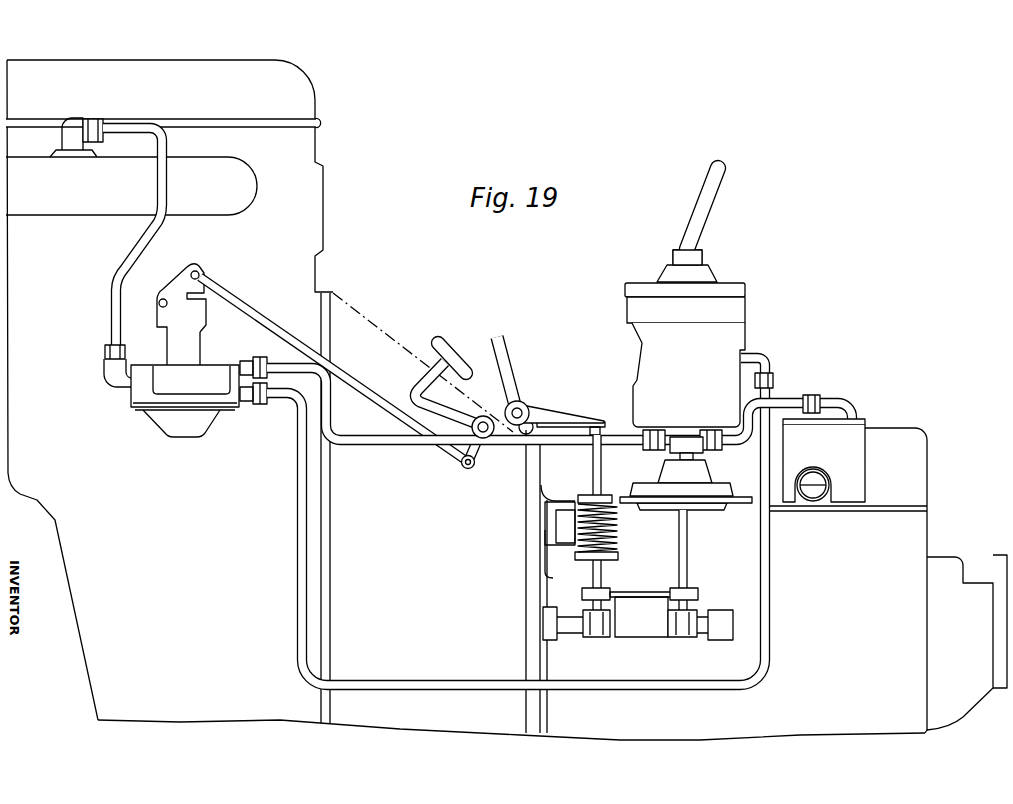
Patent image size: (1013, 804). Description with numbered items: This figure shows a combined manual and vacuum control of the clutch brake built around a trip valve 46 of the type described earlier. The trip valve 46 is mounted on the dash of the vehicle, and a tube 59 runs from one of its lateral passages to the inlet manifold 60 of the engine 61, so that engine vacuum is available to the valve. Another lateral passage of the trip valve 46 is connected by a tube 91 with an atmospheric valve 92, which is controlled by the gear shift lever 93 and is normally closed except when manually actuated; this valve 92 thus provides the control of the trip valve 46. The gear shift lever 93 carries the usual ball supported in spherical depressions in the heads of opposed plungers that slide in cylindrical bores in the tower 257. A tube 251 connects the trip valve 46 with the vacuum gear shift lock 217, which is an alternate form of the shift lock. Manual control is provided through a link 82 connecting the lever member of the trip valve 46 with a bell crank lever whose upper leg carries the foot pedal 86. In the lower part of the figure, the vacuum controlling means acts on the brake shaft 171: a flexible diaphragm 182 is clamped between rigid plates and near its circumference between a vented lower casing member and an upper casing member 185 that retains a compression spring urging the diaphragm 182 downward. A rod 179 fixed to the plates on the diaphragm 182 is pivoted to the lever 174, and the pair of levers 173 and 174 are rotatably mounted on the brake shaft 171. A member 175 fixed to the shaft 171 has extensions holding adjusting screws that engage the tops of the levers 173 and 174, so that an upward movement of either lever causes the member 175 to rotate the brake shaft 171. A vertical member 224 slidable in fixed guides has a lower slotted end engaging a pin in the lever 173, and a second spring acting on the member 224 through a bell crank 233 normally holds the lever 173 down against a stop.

The trip valve 46 is at (192, 358).
The tube 59 is at (143, 241).
The inlet manifold 60 is at (243, 180).
The engine 61 is at (311, 227).
The link 82 is at (244, 309).
The foot pedal 86 is at (447, 350).
The tube 91 is at (298, 550).
The atmospheric valve 92 is at (735, 306).
The gear shift lever 93 is at (705, 212).
The brake shaft 171 is at (572, 625).
The lever 173 is at (601, 634).
The lever 174 is at (697, 613).
The member 175 is at (648, 620).
The rod 179 is at (692, 553).
The flexible diaphragm 182 is at (749, 503).
The upper casing member 185 is at (712, 489).
The vacuum gear shift lock 217 is at (850, 437).
The vertical member 224 is at (604, 571).
The bell crank 233 is at (507, 373).
The tube 251 is at (375, 437).
The tower 257 is at (650, 347).